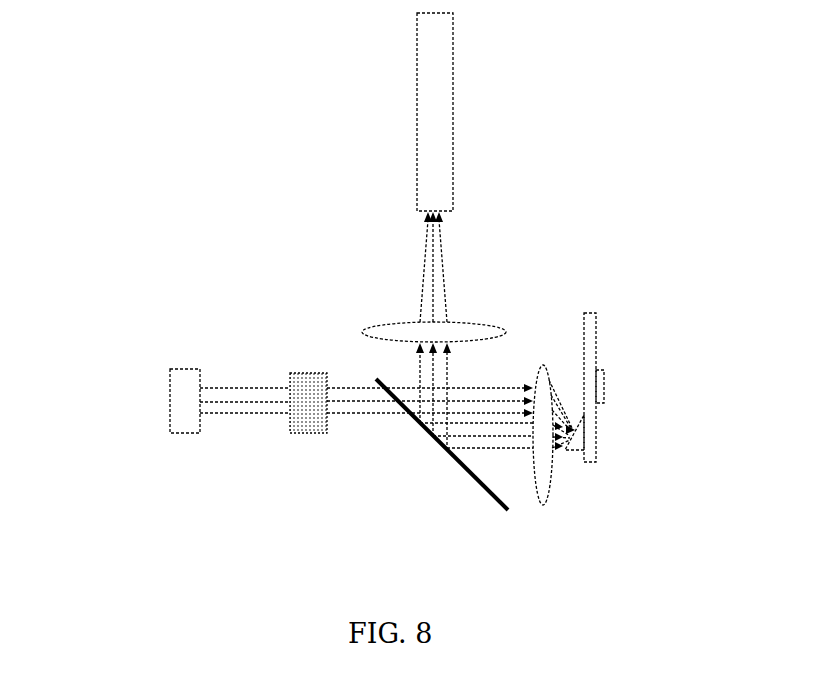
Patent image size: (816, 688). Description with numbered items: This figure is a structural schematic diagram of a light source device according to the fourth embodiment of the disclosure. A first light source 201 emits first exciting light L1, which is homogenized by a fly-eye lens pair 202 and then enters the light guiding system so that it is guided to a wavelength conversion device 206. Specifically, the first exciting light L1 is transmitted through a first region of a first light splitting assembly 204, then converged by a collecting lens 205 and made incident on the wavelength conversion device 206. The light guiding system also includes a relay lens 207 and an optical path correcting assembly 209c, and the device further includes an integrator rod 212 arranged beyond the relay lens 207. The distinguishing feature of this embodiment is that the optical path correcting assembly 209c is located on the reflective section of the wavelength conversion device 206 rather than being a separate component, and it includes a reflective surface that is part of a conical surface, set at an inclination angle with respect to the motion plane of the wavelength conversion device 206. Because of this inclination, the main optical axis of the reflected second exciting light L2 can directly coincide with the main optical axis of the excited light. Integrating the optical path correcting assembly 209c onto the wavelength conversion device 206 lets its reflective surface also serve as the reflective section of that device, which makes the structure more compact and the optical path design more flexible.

The first light source 201 is at (170, 385).
The first exciting light L1 is at (237, 414).
The fly-eye lens pair 202 is at (290, 375).
The second exciting light L2 is at (475, 449).
The first light splitting assembly 204 is at (480, 488).
The relay lens 207 is at (505, 333).
The integrator rod 212 is at (417, 122).
The collecting lens 205 is at (543, 505).
The optical path correcting assembly 209c is at (573, 452).
The wavelength conversion device 206 is at (597, 349).